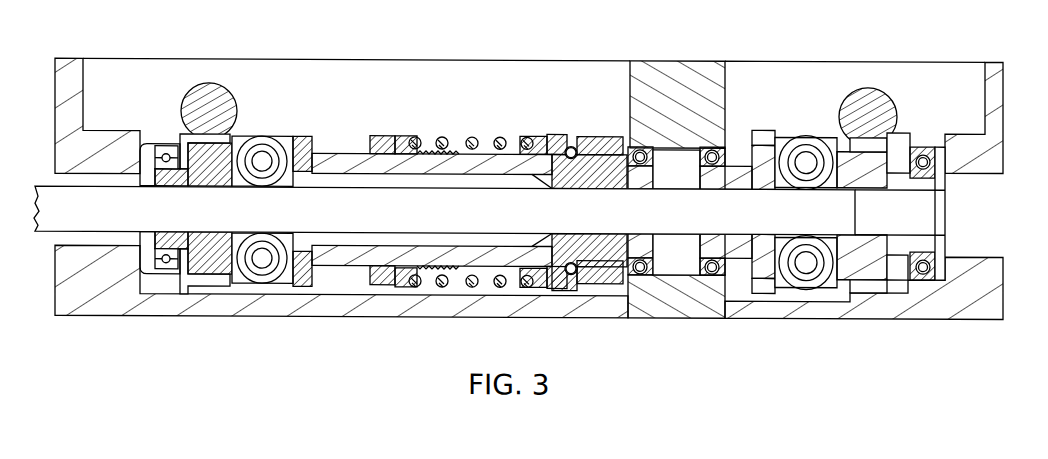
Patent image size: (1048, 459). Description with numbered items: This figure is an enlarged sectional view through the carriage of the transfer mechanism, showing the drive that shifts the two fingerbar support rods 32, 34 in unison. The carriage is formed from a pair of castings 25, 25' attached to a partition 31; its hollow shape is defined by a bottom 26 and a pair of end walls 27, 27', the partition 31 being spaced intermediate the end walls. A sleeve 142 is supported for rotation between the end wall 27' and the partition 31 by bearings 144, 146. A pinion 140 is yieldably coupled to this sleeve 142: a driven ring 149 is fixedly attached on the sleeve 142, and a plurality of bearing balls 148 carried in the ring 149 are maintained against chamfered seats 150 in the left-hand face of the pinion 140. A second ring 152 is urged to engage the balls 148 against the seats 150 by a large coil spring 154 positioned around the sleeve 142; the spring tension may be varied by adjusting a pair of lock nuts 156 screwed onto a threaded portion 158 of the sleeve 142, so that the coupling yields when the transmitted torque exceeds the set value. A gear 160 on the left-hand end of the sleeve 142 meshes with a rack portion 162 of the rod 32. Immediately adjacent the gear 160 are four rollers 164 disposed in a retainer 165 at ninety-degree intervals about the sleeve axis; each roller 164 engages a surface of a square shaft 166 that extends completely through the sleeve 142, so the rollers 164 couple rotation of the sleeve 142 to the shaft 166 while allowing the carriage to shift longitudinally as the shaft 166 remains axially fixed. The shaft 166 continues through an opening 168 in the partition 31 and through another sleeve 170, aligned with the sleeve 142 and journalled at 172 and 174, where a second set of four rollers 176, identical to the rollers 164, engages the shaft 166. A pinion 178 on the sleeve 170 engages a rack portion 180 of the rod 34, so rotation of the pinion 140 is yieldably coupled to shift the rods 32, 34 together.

The casting 25 is at (471, 313).
The casting 25' is at (685, 318).
The bottom 26 is at (407, 312).
The end wall 27 is at (549, 188).
The end wall 27' is at (97, 115).
The partition 31 is at (688, 63).
The fingerbar support rod 32 is at (190, 90).
The fingerbar support rod 34 is at (878, 98).
The pinion 140 is at (608, 137).
The sleeve 142 is at (330, 163).
The bearing 144 is at (166, 153).
The bearing 146 is at (640, 150).
The bearing balls 148 is at (548, 138).
The driven ring 149 is at (583, 133).
The chamfered seats 150 is at (571, 144).
The second ring 152 is at (540, 136).
The coil spring 154 is at (472, 137).
The lock nuts 156 is at (402, 135).
The threaded portion 158 is at (428, 150).
The gear 160 is at (187, 303).
The rack portion 162 is at (237, 135).
The rollers 164 is at (270, 262).
The retainer 165 is at (277, 137).
The square shaft 166 is at (47, 187).
The opening 168 is at (672, 152).
The sleeve 170 is at (765, 130).
The journal 172 is at (752, 135).
The journal 174 is at (915, 150).
The rollers 176 is at (800, 265).
The pinion 178 is at (868, 290).
The rack portion 180 is at (897, 145).